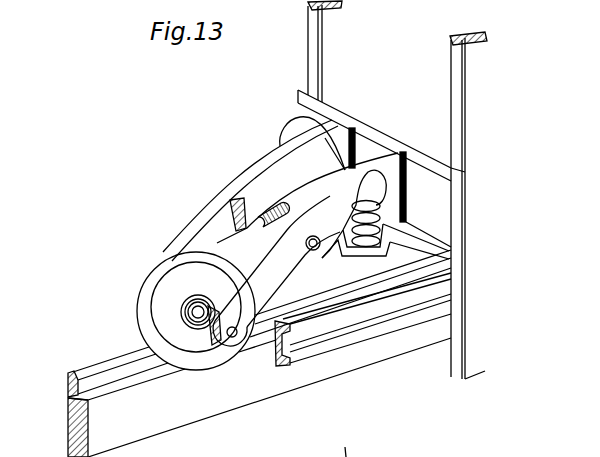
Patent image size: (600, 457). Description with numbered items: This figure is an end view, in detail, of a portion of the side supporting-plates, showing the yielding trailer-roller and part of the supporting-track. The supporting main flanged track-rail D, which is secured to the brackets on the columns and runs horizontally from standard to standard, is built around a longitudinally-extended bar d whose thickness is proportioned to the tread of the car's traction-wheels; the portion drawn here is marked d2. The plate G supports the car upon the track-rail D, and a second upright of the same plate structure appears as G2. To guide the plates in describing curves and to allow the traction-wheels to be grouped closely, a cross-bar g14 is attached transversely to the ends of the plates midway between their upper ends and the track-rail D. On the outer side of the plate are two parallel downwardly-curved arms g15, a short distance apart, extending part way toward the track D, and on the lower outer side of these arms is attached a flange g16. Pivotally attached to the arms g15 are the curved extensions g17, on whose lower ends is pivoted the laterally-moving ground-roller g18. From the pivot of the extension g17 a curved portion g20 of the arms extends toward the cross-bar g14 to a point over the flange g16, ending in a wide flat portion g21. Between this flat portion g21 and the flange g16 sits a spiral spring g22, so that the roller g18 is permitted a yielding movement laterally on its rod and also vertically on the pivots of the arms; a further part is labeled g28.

The plate G is at (392, 205).
The frame upright G2 is at (336, 51).
The cross-bar g14 is at (428, 218).
The downwardly-curved arm g15 is at (283, 160).
The flange g16 is at (416, 241).
The curved extension g17 is at (276, 271).
The ground-roller g18 is at (162, 256).
The curved portion g20 is at (255, 180).
The wide flat portion g21 is at (366, 183).
The spiral spring g22 is at (378, 245).
The stop g28 is at (359, 449).
The track-rail D is at (259, 323).
The bar d is at (259, 397).
The guide strip d2 is at (363, 319).